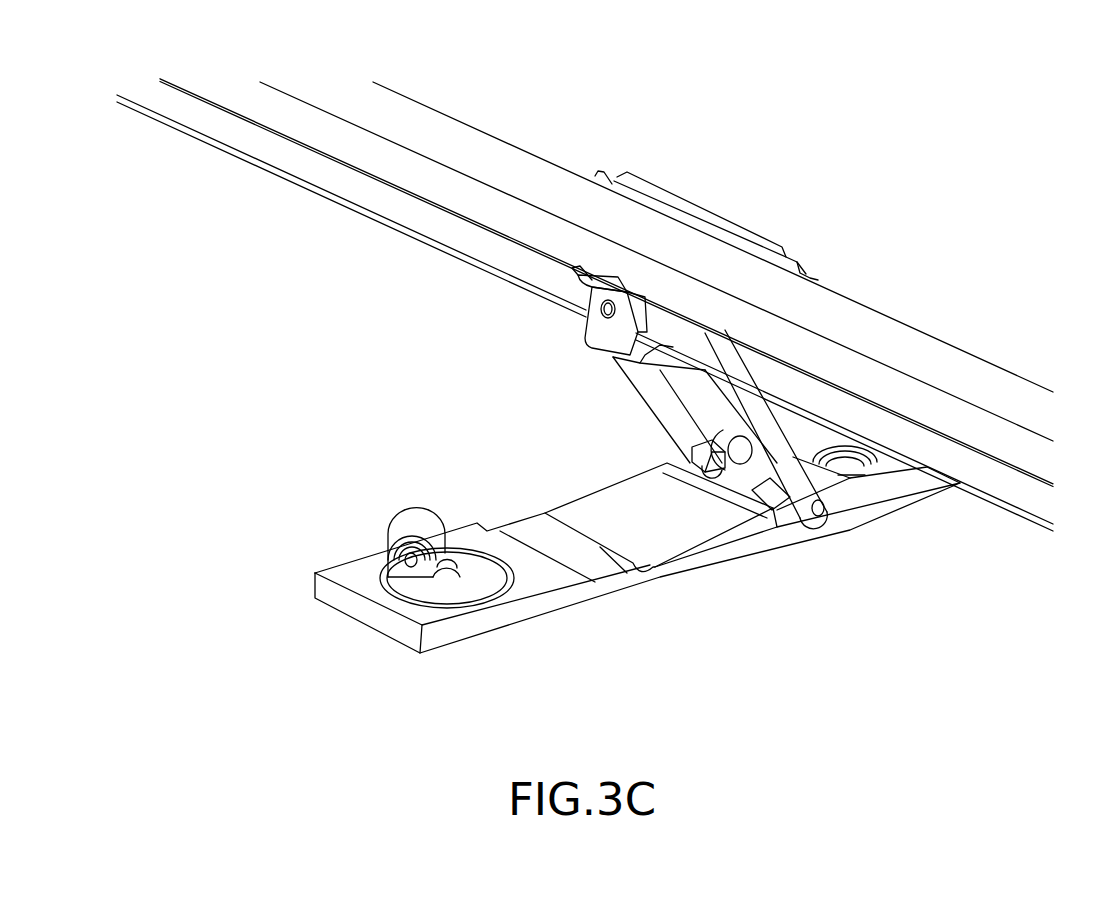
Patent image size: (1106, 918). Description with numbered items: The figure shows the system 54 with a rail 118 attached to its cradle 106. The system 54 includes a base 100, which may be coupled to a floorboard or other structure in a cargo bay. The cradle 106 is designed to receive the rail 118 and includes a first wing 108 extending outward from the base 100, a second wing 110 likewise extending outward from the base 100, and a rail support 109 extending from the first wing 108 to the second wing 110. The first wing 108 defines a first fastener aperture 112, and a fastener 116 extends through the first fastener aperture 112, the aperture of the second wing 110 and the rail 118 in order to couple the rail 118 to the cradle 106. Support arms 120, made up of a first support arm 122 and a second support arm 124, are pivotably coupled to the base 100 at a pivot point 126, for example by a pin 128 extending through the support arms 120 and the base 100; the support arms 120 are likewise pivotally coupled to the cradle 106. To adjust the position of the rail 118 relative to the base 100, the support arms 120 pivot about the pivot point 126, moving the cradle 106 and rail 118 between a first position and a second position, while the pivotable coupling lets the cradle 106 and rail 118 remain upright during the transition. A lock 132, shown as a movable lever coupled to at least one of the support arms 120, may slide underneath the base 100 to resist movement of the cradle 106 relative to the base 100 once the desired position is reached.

The system 54 is at (268, 414).
The base 100 is at (662, 590).
The cradle 106 is at (658, 348).
The first wing 108 is at (604, 289).
The rail support 109 is at (648, 384).
The second wing 110 is at (750, 221).
The first fastener aperture 112 is at (578, 272).
The fastener 116 is at (528, 273).
The rail 118 is at (387, 105).
The support arms 120 is at (883, 497).
The first support arm 122 is at (720, 372).
The second support arm 124 is at (800, 448).
The pivot point 126 is at (850, 520).
The pin 128 is at (826, 525).
The lock 132 is at (778, 522).